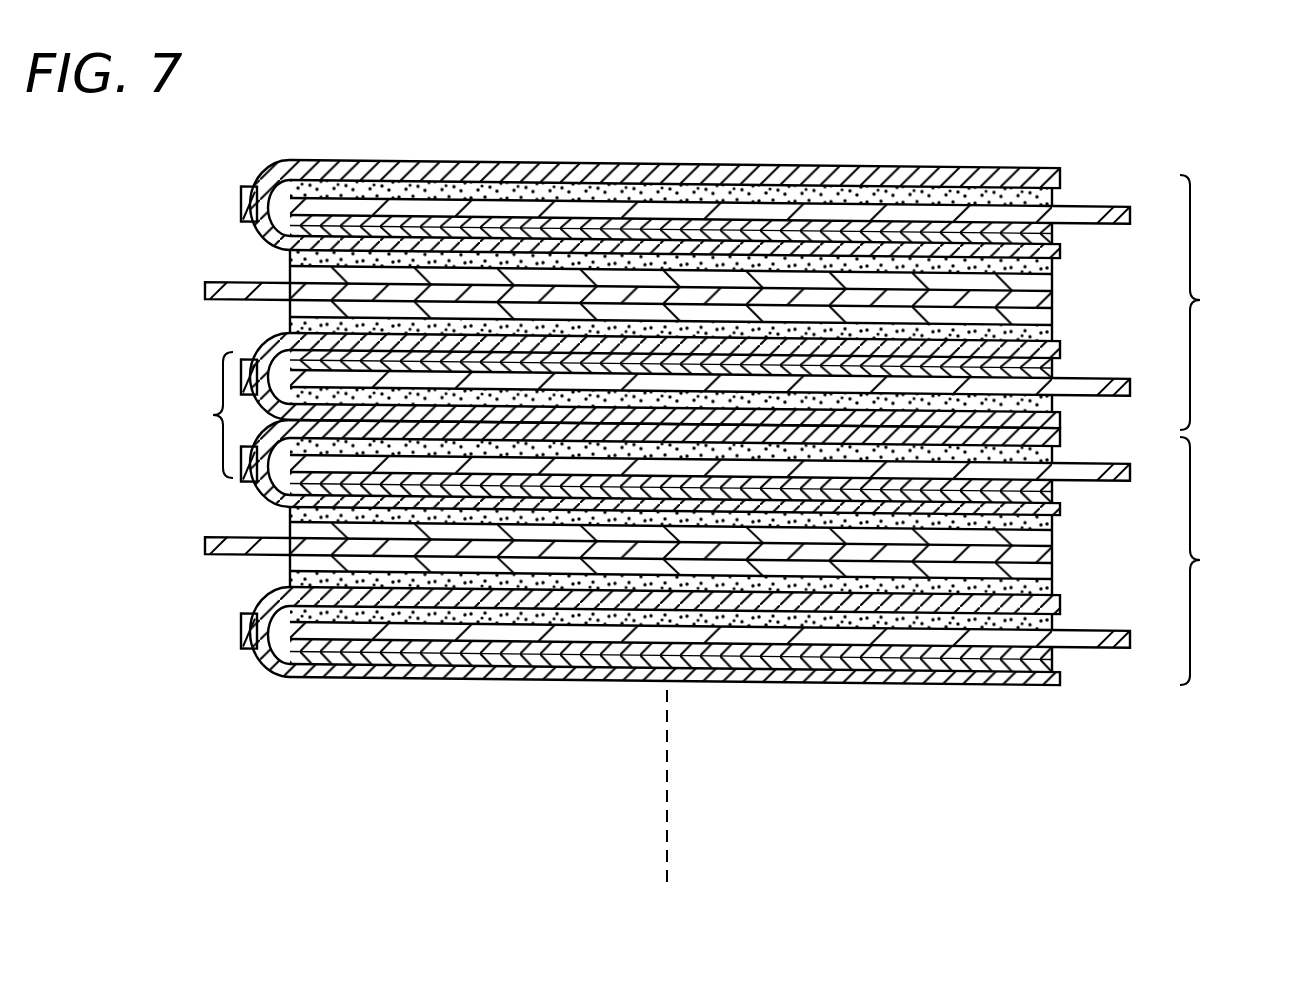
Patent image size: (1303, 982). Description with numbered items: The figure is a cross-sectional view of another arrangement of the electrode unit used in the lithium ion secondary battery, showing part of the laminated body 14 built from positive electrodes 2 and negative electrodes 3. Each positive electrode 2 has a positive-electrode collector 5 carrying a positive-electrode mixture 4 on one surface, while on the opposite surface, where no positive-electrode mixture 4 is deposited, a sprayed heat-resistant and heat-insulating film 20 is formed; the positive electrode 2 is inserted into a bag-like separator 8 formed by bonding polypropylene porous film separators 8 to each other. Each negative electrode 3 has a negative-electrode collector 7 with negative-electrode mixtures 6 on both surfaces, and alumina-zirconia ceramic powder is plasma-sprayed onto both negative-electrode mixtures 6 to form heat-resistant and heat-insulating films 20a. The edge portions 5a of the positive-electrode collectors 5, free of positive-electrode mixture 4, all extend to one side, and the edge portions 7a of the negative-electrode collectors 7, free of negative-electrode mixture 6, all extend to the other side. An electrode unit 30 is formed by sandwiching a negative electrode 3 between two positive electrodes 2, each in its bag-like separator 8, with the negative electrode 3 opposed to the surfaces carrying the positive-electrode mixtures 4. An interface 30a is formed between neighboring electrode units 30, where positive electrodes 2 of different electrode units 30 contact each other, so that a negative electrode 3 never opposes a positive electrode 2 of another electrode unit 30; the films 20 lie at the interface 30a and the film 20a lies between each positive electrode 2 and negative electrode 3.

The positive electrode 2 is at (168, 224).
The negative electrode 3 is at (168, 309).
The positive-electrode mixture 4 is at (465, 210).
The positive-electrode collector 5 is at (430, 228).
The edge portion of the positive-electrode collector 5a is at (1112, 208).
The negative-electrode mixture 6 is at (580, 276).
The negative-electrode collector 7 is at (622, 292).
The edge portion of the negative-electrode collector 7a is at (230, 287).
The separator 8 is at (345, 175).
The laminated body 14 is at (1285, 447).
The heat-resistant and heat-insulating film 20 is at (372, 190).
The heat-resistant and heat-insulating film 20a is at (540, 258).
The electrode unit 30 is at (1212, 430).
The interface 30a is at (195, 415).